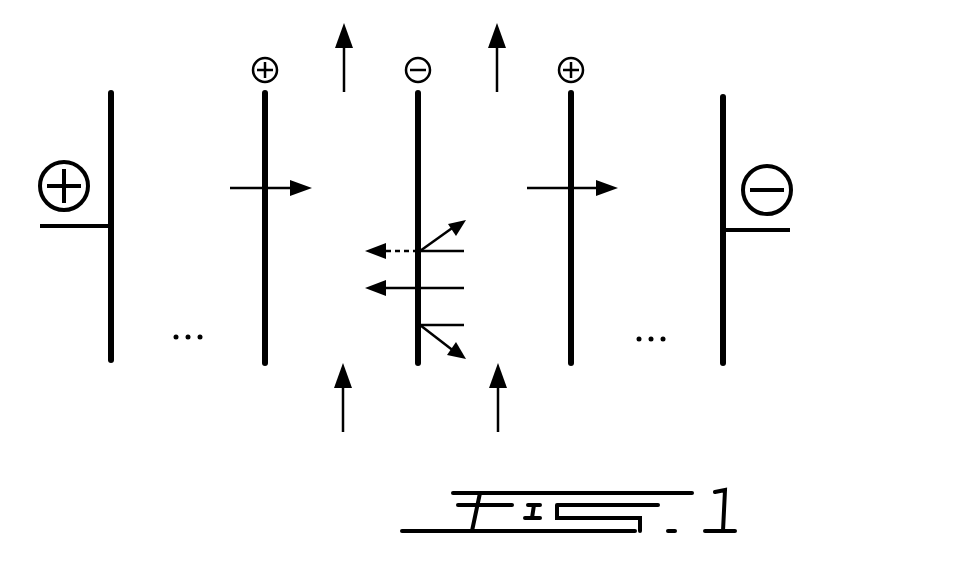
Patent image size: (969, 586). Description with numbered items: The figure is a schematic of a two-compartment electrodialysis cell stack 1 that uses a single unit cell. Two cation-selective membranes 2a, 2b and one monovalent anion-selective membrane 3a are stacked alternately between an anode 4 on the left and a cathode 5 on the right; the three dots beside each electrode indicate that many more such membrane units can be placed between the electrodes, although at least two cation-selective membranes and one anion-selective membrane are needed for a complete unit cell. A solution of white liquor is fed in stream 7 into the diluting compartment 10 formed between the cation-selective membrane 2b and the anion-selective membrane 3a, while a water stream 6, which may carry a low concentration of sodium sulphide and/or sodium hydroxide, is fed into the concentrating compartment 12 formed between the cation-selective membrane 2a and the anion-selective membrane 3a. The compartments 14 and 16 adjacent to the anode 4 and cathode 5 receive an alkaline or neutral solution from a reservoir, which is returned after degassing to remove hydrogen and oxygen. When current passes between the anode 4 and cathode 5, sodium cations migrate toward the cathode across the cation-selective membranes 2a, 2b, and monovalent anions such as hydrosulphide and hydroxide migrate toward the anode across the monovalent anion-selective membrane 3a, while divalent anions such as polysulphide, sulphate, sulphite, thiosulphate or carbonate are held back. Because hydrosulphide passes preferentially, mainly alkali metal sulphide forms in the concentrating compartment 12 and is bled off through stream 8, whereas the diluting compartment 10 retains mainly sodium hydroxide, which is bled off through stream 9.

The ED cell stack 1 is at (83, 113).
The anode 4 is at (113, 255).
The cathode 5 is at (718, 258).
The cation-selective membrane 2a is at (267, 131).
The cation-selective membrane 2b is at (573, 133).
The monovalent anion-selective membrane 3a is at (420, 132).
The water stream 6 is at (345, 405).
The stream 7 is at (500, 405).
The stream 8 is at (346, 70).
The stream 9 is at (499, 70).
The diluting compartment 10 is at (548, 372).
The concentrating compartment 12 is at (293, 368).
The compartment 14 is at (133, 367).
The compartment 16 is at (692, 372).